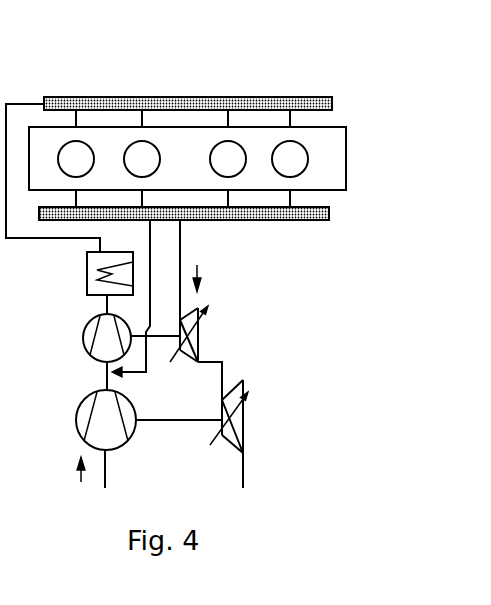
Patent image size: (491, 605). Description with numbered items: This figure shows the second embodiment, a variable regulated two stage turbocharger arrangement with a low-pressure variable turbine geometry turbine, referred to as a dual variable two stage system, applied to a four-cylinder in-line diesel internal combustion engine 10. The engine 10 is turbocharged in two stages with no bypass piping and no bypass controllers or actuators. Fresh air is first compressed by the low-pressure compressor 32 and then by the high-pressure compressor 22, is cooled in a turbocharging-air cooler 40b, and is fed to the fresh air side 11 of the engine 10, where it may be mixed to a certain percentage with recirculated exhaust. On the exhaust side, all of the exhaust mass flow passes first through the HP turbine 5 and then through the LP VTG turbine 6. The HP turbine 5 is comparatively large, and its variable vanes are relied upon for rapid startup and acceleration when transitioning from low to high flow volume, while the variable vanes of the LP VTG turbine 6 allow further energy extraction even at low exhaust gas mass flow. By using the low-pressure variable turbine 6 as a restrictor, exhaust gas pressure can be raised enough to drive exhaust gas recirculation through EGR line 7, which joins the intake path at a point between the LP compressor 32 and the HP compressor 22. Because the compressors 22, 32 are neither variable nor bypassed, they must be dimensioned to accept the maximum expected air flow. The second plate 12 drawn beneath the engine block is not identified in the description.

The internal combustion engine 10 is at (332, 70).
The fresh air side 11 is at (205, 97).
The second heat exchanger plate 12 is at (305, 221).
The EGR line 7 is at (150, 263).
The turbocharging-air cooler 40b is at (87, 268).
The high-pressure compressor 22 is at (83, 337).
The low-pressure compressor 32 is at (77, 418).
The HP turbine 5 is at (200, 345).
The LP VTG turbine 6 is at (235, 425).